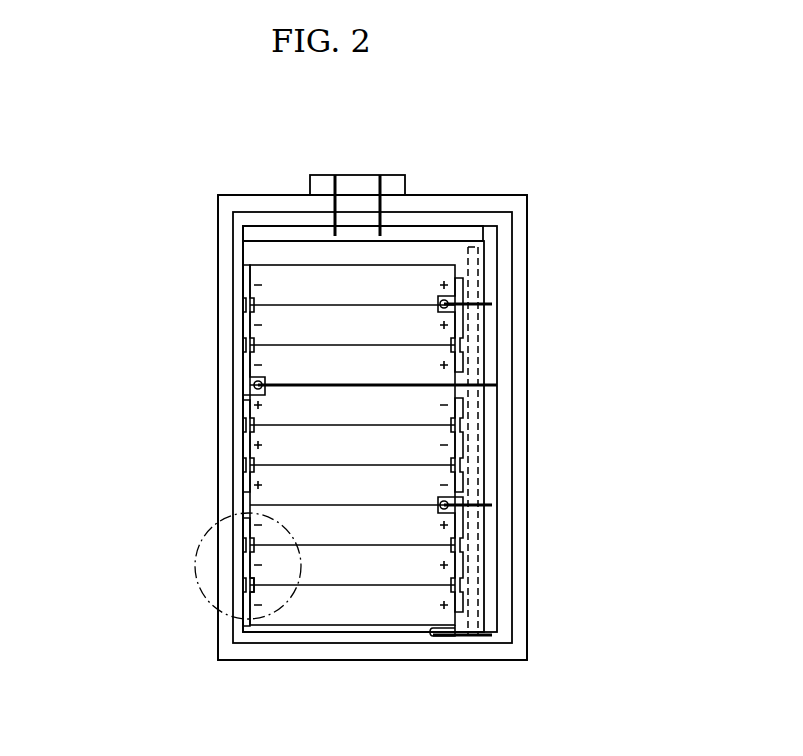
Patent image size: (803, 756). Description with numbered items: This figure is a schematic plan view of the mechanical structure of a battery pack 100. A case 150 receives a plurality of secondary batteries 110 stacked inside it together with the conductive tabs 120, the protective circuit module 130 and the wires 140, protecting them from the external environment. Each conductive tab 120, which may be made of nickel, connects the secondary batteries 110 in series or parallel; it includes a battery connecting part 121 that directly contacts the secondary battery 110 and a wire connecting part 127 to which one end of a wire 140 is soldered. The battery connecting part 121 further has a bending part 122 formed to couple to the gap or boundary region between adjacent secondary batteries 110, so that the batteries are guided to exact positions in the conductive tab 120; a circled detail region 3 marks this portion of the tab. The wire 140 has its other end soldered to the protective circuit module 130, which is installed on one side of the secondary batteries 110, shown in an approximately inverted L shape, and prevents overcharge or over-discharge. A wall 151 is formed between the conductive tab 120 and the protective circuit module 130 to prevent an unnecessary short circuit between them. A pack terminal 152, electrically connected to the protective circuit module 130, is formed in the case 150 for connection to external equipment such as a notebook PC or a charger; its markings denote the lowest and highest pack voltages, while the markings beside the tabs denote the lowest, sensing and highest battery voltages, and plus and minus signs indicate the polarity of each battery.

The battery pack 100 is at (252, 147).
The case 150 is at (530, 200).
The pack terminal 152 is at (400, 173).
The wall 151 is at (482, 578).
The protective circuit module 130 is at (246, 235).
The secondary battery 110 is at (263, 270).
The conductive tab 120 is at (251, 666).
The battery connecting part 121 is at (245, 606).
The bending part 122 is at (232, 586).
The wire connecting part 127 is at (331, 637).
The wire 140 is at (455, 640).
The detail region 3 is at (205, 548).